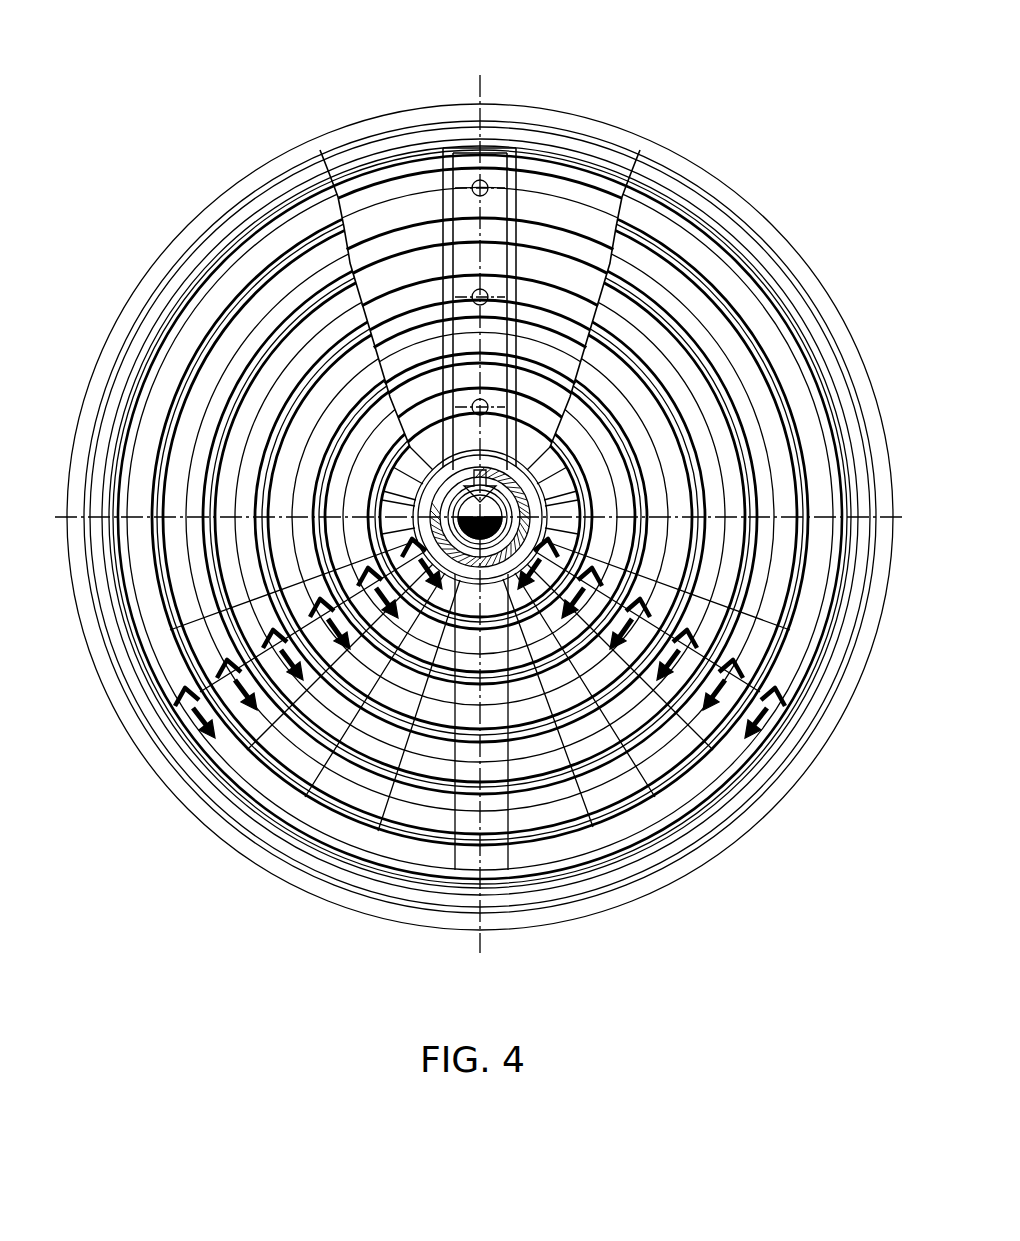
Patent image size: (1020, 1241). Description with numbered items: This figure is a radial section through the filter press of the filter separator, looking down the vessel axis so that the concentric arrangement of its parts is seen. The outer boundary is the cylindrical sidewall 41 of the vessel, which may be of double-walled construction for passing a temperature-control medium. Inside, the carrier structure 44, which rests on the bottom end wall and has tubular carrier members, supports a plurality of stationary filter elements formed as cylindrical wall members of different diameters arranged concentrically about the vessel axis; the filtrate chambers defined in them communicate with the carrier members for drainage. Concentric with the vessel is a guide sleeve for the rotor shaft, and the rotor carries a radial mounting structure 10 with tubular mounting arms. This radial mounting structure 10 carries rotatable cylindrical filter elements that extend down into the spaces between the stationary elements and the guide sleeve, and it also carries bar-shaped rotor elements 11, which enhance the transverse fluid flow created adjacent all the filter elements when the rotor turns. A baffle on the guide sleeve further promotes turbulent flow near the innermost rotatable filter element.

The radial mounting structure 10 is at (496, 178).
The bar-shaped rotor elements 11 is at (262, 642).
The cylindrical sidewall 41 is at (209, 802).
The carrier structure 44 is at (190, 328).